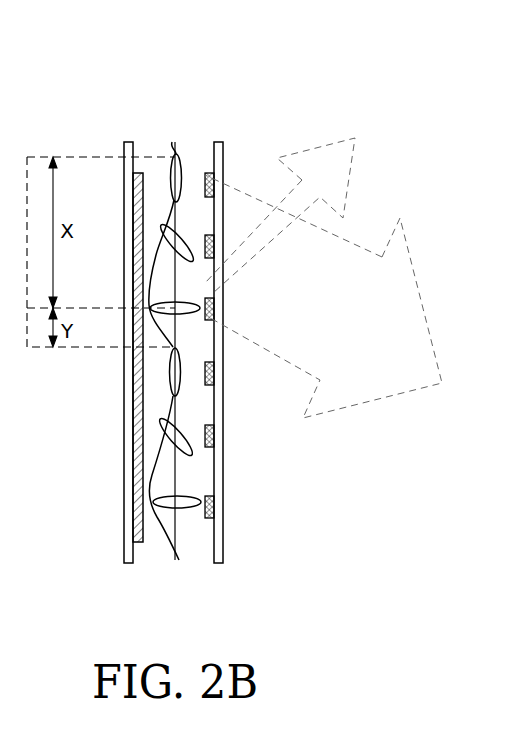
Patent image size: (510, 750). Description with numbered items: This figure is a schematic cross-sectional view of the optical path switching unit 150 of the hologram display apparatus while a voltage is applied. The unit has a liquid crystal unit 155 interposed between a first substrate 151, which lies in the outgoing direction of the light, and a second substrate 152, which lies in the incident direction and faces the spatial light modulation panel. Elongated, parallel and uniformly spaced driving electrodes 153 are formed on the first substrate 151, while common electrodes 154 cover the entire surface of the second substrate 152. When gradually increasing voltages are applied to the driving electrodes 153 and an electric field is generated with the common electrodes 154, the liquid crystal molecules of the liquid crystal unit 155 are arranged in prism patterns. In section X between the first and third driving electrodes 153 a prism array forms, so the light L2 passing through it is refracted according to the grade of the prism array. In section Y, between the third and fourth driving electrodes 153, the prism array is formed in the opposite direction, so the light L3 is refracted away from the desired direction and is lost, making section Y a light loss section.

The optical path switching unit 150 is at (80, 63).
The first substrate 151 is at (219, 142).
The second substrate 152 is at (130, 142).
The driving electrodes 153 is at (210, 172).
The common electrodes 154 is at (138, 173).
The liquid crystal unit 155 is at (176, 154).
The light L3 is at (322, 147).
The light L2 is at (417, 273).